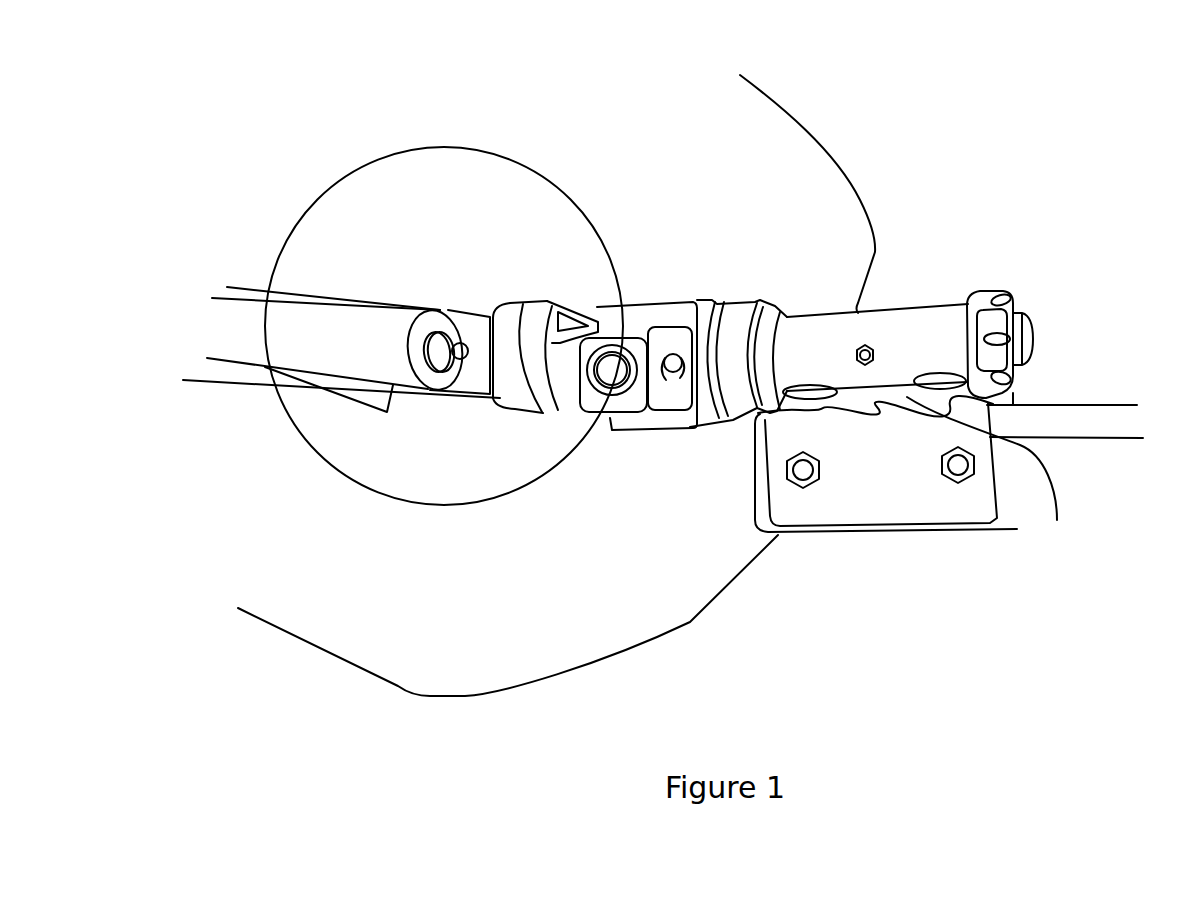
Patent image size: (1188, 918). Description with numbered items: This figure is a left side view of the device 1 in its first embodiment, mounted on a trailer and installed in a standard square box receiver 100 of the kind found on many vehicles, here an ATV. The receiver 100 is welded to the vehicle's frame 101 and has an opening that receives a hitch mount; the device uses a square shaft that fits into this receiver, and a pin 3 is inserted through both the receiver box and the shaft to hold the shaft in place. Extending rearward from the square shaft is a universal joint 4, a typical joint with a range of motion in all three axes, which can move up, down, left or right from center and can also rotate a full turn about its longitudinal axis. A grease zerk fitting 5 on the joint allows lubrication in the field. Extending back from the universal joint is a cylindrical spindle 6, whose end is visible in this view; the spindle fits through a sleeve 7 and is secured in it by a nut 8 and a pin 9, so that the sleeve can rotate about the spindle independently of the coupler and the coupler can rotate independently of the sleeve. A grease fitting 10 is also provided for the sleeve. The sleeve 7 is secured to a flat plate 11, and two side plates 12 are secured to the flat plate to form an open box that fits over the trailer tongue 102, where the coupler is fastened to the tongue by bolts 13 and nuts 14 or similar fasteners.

The device 1 is at (888, 266).
The pin 3 is at (425, 387).
The universal joint 4 is at (662, 343).
The grease zerk fitting 5 is at (675, 380).
The cylindrical spindle 6 is at (1032, 332).
The sleeve 7 is at (907, 307).
The nut 8 is at (990, 292).
The pin 9 is at (1000, 339).
The grease fitting 10 is at (874, 355).
The flat plate 11 is at (915, 472).
The side plates 12 is at (837, 512).
The bolts 13 is at (803, 470).
The nuts 14 is at (938, 468).
The square box receiver 100 is at (342, 323).
The vehicle frame 101 is at (258, 383).
The trailer tongue 102 is at (1092, 432).